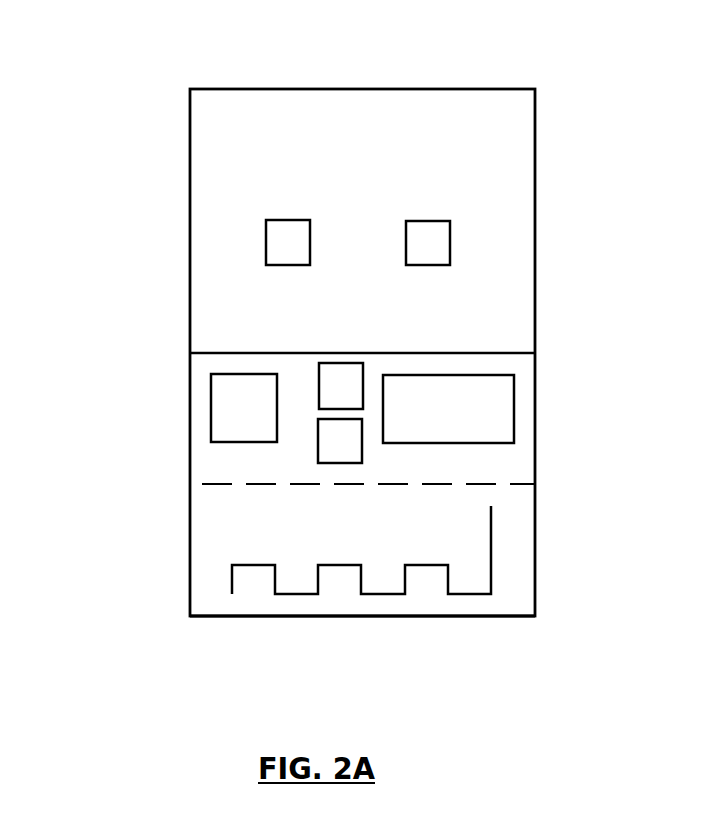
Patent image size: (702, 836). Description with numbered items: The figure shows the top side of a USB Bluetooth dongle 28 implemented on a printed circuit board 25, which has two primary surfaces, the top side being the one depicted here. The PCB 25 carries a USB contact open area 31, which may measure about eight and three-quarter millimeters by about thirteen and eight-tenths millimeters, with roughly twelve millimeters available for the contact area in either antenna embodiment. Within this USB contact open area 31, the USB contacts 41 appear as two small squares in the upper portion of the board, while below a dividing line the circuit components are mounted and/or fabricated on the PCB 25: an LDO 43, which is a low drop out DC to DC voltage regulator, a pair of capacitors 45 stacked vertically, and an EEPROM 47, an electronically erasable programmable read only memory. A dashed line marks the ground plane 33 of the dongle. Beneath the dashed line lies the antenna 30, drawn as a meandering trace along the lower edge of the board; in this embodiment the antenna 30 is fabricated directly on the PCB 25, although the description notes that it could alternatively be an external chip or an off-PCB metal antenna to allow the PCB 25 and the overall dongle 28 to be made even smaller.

The USB Bluetooth dongle 28 is at (148, 45).
The USB contact open area 31 is at (383, 89).
The USB contacts 41 is at (266, 220).
The ground plane 33 is at (535, 507).
The LDO 43 is at (211, 392).
The capacitors 45 is at (319, 363).
The EEPROM 47 is at (460, 375).
The antenna 30 is at (232, 565).
The printed circuit board 25 is at (190, 616).